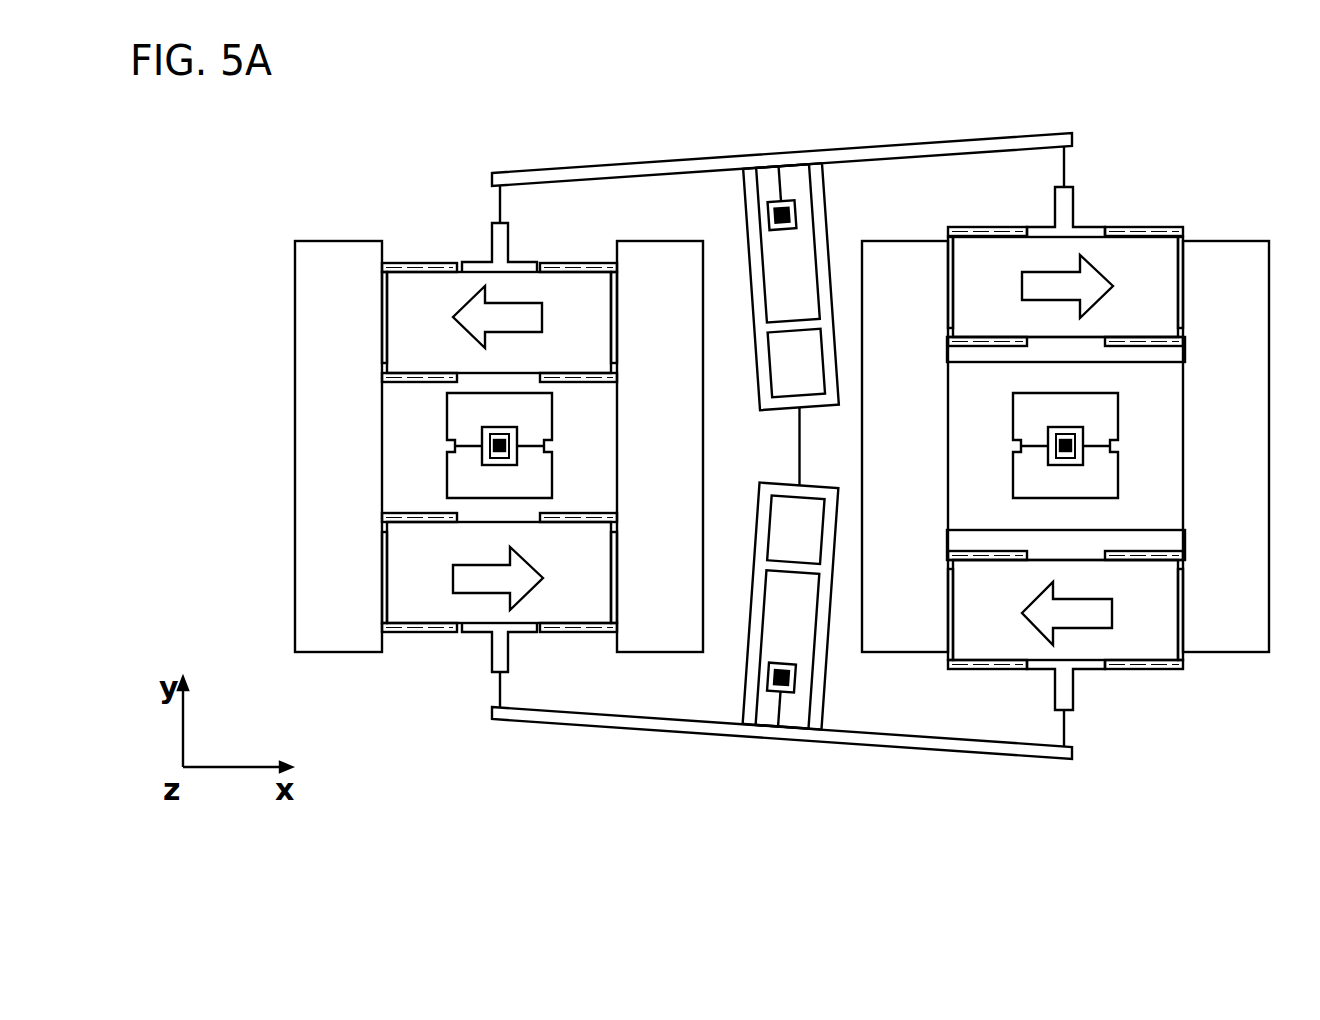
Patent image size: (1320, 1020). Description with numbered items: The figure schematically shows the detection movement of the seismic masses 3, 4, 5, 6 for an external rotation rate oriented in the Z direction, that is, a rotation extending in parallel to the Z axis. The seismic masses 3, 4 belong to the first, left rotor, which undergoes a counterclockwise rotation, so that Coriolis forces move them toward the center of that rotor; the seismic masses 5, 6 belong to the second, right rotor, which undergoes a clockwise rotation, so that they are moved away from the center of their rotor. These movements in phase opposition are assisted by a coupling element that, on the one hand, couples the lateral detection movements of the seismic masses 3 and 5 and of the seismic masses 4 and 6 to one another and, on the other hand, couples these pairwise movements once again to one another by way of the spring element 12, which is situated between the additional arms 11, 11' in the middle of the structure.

The seismic mass 3 is at (434, 293).
The seismic mass 4 is at (412, 608).
The seismic mass 5 is at (1142, 262).
The seismic mass 6 is at (1143, 640).
The additional arm 11 is at (724, 244).
The additional arm 11' is at (854, 658).
The spring element 12 is at (792, 448).